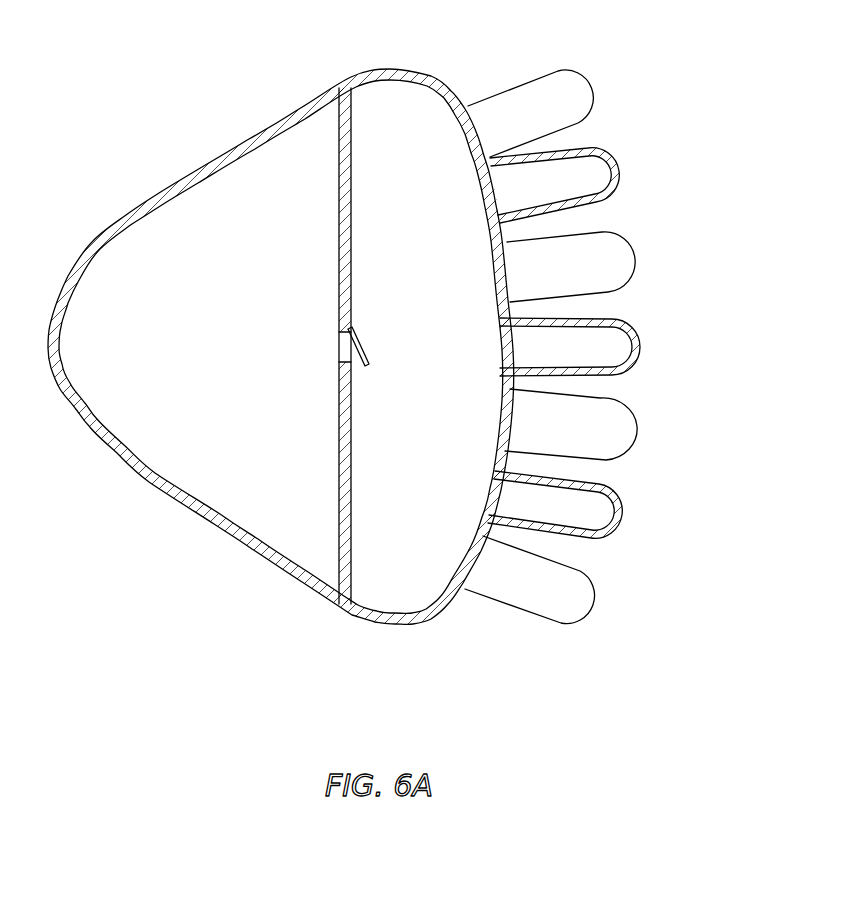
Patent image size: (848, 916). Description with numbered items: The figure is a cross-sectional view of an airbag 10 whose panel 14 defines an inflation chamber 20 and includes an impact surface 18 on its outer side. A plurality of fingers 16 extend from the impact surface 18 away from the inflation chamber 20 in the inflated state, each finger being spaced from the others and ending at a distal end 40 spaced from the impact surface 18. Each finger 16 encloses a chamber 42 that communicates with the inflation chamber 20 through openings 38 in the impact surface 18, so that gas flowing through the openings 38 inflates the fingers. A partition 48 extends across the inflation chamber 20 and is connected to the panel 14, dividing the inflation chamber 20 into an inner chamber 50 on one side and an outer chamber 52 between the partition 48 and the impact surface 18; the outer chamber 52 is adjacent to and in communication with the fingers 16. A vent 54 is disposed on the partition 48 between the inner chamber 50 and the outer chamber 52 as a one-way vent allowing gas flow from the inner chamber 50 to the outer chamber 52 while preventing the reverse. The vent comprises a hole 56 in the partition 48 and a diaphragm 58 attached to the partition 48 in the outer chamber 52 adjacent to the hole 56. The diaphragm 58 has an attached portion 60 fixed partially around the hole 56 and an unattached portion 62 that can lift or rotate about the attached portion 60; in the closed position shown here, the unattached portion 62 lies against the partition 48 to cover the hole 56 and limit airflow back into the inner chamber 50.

The airbag 10 is at (273, 337).
The panel 14 is at (218, 158).
The fingers 16 is at (566, 82).
The impact surface 18 is at (453, 88).
The inflation chamber 20 is at (165, 391).
The openings 38 is at (477, 203).
The distal end 40 is at (594, 96).
The chamber 42 is at (590, 175).
The partition 48 is at (337, 160).
The inner chamber 50 is at (193, 458).
The outer chamber 52 is at (387, 577).
The vent 54 is at (365, 378).
The hole 56 is at (326, 345).
The diaphragm 58 is at (365, 349).
The attached portion 60 is at (359, 328).
The unattached portion 62 is at (372, 364).